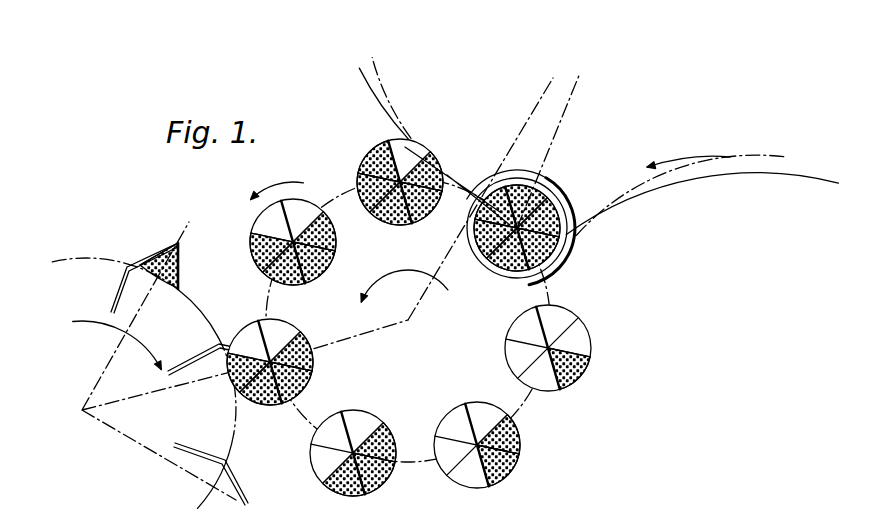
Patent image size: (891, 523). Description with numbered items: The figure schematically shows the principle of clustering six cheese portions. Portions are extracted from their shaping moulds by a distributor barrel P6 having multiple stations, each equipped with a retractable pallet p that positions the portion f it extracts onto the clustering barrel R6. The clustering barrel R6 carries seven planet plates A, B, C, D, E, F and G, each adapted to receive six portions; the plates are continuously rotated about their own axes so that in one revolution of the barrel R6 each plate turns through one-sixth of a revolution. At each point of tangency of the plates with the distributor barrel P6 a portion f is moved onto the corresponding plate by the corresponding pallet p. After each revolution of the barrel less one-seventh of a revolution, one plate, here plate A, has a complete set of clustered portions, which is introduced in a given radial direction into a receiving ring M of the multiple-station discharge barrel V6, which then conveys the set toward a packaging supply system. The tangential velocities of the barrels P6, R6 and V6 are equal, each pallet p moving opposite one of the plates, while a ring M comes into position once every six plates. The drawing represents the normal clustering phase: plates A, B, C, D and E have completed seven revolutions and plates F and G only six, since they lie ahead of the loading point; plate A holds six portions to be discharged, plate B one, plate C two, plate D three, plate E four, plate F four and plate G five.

The planet plate A is at (550, 214).
The planet plate B is at (592, 357).
The planet plate C is at (522, 450).
The planet plate D is at (383, 477).
The planet plate E is at (266, 404).
The planet plate F is at (311, 283).
The planet plate G is at (392, 224).
The receiving ring M is at (578, 215).
The clustering barrel R6 is at (545, 283).
The multiple-station discharge barrel V6 is at (688, 242).
The distributor barrel P6 is at (77, 277).
The retractable pallet p is at (150, 258).
The portion f is at (180, 270).